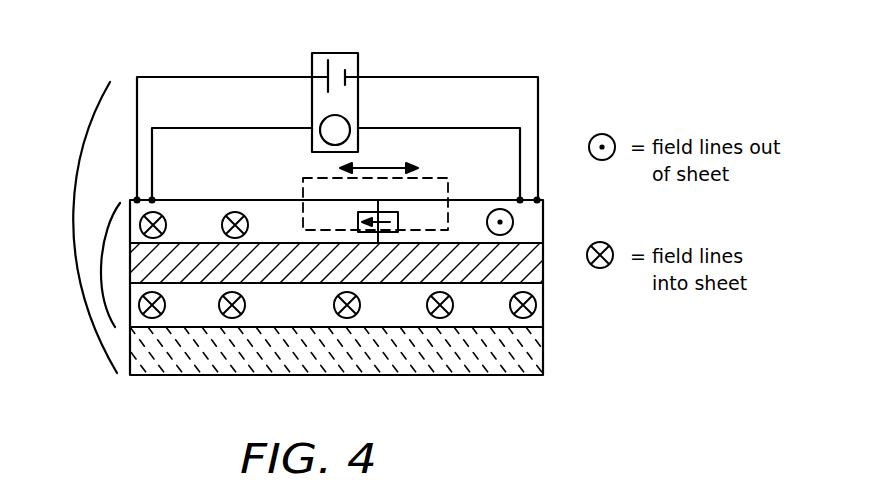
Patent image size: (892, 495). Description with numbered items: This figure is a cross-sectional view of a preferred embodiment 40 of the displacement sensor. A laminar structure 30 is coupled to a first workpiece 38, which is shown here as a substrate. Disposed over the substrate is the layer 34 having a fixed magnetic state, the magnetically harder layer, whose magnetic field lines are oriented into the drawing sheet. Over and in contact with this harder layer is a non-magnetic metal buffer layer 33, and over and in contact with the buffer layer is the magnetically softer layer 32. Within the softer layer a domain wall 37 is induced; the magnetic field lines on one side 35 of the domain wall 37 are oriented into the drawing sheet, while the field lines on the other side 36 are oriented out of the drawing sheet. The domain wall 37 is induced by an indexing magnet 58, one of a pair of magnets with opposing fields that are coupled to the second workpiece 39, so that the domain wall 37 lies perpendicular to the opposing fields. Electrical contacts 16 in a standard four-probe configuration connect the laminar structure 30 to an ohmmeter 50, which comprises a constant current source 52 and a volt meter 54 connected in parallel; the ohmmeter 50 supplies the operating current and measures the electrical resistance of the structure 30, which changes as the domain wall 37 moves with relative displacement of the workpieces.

The electrode contacts 16 is at (152, 200).
The laminar structure 30 is at (100, 224).
The magnetically softer layer 32 is at (259, 232).
The non-magnetic metal buffer layer 33 is at (328, 270).
The layer with fixed magnetic state 34 is at (279, 315).
The one side of the domain wall 35 is at (183, 232).
The other side of the domain wall 36 is at (458, 232).
The domain wall 37 is at (358, 213).
The first workpiece 38 is at (291, 358).
The second workpiece 39 is at (398, 222).
The preferred embodiment 40 is at (64, 210).
The ohmmeter 50 is at (358, 60).
The constant current source 52 is at (312, 73).
The volt meter 54 is at (321, 124).
The indexing magnet 58 is at (384, 212).